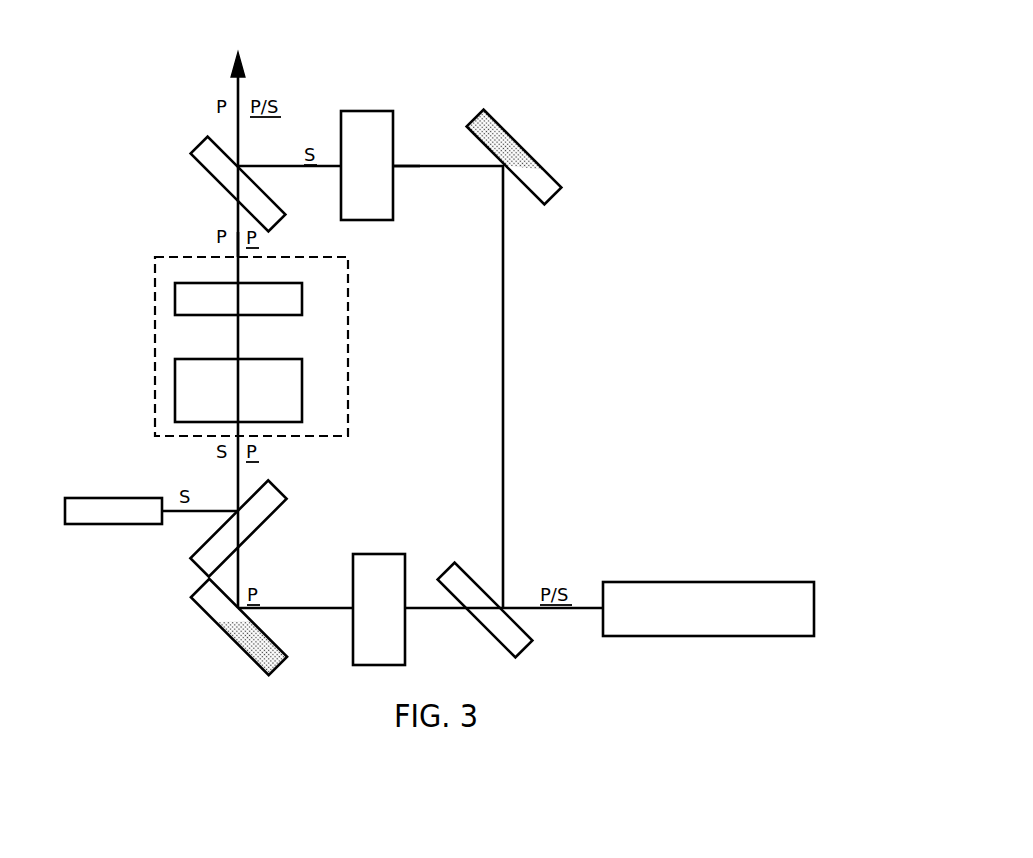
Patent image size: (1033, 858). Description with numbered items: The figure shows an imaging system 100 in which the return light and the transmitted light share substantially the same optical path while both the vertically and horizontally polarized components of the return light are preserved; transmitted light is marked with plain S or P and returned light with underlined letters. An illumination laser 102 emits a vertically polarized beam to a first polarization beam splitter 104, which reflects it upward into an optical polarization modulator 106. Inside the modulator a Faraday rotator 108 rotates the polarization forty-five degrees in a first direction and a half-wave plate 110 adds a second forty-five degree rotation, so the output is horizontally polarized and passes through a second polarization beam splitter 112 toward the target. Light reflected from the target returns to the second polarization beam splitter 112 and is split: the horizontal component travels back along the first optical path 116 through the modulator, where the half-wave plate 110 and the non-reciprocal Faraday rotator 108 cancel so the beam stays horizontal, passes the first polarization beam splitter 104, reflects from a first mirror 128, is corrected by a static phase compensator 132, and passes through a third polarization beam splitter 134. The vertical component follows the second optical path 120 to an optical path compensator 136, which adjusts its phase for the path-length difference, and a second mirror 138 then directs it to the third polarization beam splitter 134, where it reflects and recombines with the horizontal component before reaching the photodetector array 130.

The imaging system 100 is at (601, 62).
The illumination laser 102 is at (86, 498).
The first polarization beam splitter 104 is at (277, 487).
The optical polarization modulator 106 is at (348, 347).
The Faraday rotator 108 is at (266, 359).
The half-wave plate 110 is at (266, 283).
The second polarization beam splitter 112 is at (278, 221).
The first optical path 116 is at (178, 214).
The second optical path 120 is at (412, 201).
The first mirror 128 is at (270, 643).
The photodetector array 130 is at (631, 582).
The static phase compensator 132 is at (366, 554).
The third polarization beam splitter 134 is at (468, 570).
The optical path compensator 136 is at (349, 111).
The second mirror 138 is at (499, 125).